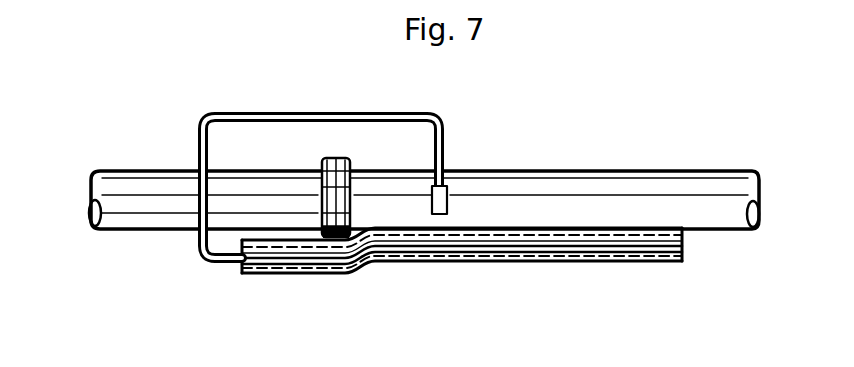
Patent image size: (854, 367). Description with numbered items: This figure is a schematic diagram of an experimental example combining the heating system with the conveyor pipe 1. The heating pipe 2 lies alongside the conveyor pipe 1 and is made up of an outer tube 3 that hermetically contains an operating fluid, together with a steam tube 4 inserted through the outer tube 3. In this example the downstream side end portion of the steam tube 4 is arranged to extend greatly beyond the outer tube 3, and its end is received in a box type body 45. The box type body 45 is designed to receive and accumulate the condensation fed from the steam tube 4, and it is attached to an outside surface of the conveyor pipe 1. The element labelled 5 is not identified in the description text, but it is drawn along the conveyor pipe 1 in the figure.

The conveyor pipe 1 is at (503, 172).
The protective sheath 5 is at (586, 192).
The heating pipe 2 is at (452, 259).
The outer tube 3 is at (318, 273).
The steam tube 4 is at (292, 273).
The box type body 45 is at (447, 201).